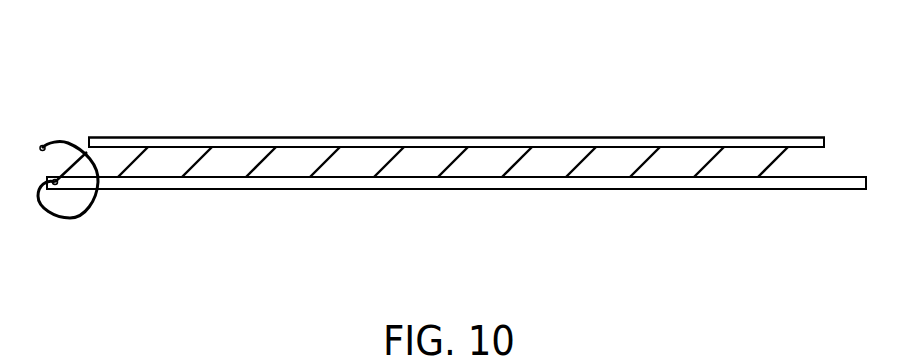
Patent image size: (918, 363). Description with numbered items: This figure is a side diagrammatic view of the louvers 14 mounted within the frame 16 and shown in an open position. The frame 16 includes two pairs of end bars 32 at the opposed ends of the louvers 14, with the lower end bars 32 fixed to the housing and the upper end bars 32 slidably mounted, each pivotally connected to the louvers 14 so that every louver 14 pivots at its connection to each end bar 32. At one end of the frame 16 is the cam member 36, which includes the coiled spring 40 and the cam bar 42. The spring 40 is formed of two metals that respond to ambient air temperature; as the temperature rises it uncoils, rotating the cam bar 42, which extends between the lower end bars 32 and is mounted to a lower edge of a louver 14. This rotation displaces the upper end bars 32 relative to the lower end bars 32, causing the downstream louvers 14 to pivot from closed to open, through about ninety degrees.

The louvers 14 is at (516, 150).
The frame 16 is at (383, 137).
The end bars 32 is at (222, 137).
The cam member 36 is at (42, 146).
The spring 40 is at (63, 217).
The cam bar 42 is at (68, 147).